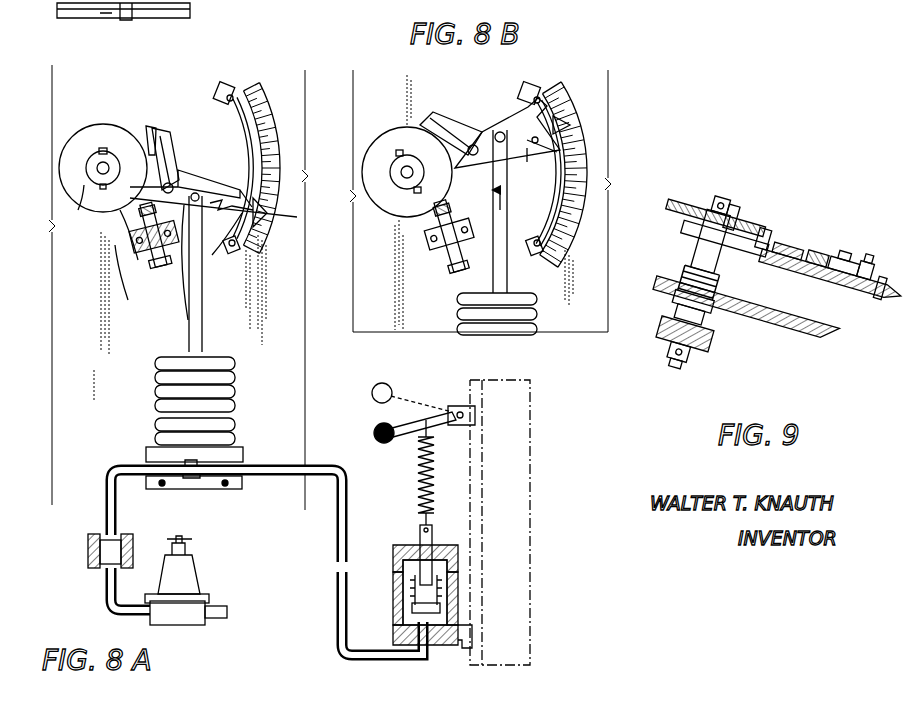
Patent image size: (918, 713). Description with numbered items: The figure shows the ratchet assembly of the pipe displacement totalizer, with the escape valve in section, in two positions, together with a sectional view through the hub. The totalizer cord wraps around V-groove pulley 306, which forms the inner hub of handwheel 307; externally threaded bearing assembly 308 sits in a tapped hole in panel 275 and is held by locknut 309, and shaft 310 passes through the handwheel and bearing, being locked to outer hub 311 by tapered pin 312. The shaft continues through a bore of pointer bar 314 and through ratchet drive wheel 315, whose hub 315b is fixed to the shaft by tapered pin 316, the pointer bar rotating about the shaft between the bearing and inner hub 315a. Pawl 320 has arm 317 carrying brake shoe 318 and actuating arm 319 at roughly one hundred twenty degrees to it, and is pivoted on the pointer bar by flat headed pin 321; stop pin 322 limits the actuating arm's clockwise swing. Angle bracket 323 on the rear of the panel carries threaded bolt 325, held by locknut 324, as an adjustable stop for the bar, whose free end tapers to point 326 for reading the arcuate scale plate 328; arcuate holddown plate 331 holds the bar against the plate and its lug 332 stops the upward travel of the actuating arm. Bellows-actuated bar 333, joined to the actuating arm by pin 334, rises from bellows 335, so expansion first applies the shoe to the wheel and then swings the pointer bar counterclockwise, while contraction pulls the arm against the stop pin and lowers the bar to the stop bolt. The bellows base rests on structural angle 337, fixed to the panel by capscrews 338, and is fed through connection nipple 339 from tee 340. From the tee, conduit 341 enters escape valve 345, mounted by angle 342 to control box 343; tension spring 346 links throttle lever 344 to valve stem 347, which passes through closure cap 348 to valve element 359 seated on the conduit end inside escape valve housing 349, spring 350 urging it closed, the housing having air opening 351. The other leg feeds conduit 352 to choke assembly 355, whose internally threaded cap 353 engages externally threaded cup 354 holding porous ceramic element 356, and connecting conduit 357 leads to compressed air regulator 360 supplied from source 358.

In FIG. 8A, the panel 275 is at (195, 4).
In FIG. 9, the panel 275 is at (823, 337).
In FIG. 9, the V-groove pulley 306 is at (712, 330).
In FIG. 9, the handwheel 307 is at (663, 326).
In FIG. 9, the externally threaded bearing assembly 308 is at (725, 283).
In FIG. 9, the locknut 309 is at (727, 303).
In FIG. 8A, the shaft 310 is at (105, 160).
In FIG. 9, the shaft 310 is at (677, 368).
In FIG. 9, the outer hub 311 is at (667, 349).
In FIG. 9, the tapered pin 312 is at (693, 357).
In FIG. 8A, the pointer bar 314 is at (214, 164).
In FIG. 8B, the pointer bar 314 is at (507, 145).
In FIG. 9, the pointer bar 314 is at (847, 283).
In FIG. 8A, the ratchet drive wheel 315 is at (125, 240).
In FIG. 8B, the ratchet drive wheel 315 is at (386, 132).
In FIG. 9, the ratchet drive wheel 315 is at (683, 203).
In FIG. 9, the inner hub 315a is at (690, 226).
In FIG. 8A, the hub 315b is at (85, 200).
In FIG. 9, the hub 315b is at (735, 207).
In FIG. 8A, the tapered pin 316 is at (103, 150).
In FIG. 9, the tapered pin 316 is at (718, 197).
In FIG. 8A, the arm 317 is at (172, 165).
In FIG. 9, the arm 317 is at (797, 240).
In FIG. 8A, the brake shoe 318 is at (148, 125).
In FIG. 8B, the brake shoe 318 is at (422, 115).
In FIG. 9, the brake shoe 318 is at (773, 236).
In FIG. 8A, the actuating arm 319 is at (150, 262).
In FIG. 9, the actuating arm 319 is at (862, 257).
In FIG. 8A, the shoe lever or pawl 320 is at (165, 115).
In FIG. 8B, the shoe lever or pawl 320 is at (468, 122).
In FIG. 9, the shoe lever or pawl 320 is at (840, 253).
In FIG. 8A, the flat headed pin 321 is at (128, 255).
In FIG. 8B, the flat headed pin 321 is at (450, 236).
In FIG. 9, the flat headed pin 321 is at (816, 233).
In FIG. 8A, the stop pin 322 is at (236, 225).
In FIG. 8B, the stop pin 322 is at (561, 125).
In FIG. 9, the stop pin 322 is at (857, 283).
In FIG. 8A, the angle bracket 323 is at (118, 275).
In FIG. 8A, the locknut 324 is at (136, 275).
In FIG. 8A, the threaded bolt 325 is at (140, 270).
In FIG. 8A, the point 326 is at (260, 232).
In FIG. 8B, the arcuate scale plate 328 is at (577, 100).
In FIG. 8A, the arcuate holddown plate 331 is at (268, 110).
In FIG. 8B, the arcuate holddown plate 331 is at (555, 192).
In FIG. 8B, the lug 332 is at (530, 92).
In FIG. 8A, the bellows-actuated bar 333 is at (203, 310).
In FIG. 8B, the bellows-actuated bar 333 is at (500, 211).
In FIG. 8A, the pin 334 is at (203, 240).
In FIG. 8A, the bellows 335 is at (237, 392).
In FIG. 8B, the bellows 335 is at (497, 314).
In FIG. 8A, the structural angle 337 is at (248, 460).
In FIG. 8A, the capscrews 338 is at (242, 490).
In FIG. 8A, the connection nipple 339 is at (183, 466).
In FIG. 8A, the tee 340 is at (197, 480).
In FIG. 8A, the conduit 341 is at (338, 605).
In FIG. 8A, the angle 342 is at (464, 648).
In FIG. 8A, the control box 343 is at (520, 521).
In FIG. 8A, the throttle lever 344 is at (378, 428).
In FIG. 8A, the escape valve 345 is at (408, 495).
In FIG. 8A, the tension spring 346 is at (415, 447).
In FIG. 8A, the valve stem 347 is at (418, 528).
In FIG. 8A, the closure cap 348 is at (395, 548).
In FIG. 8A, the escape valve housing 349 is at (398, 636).
In FIG. 8A, the spring 350 is at (437, 590).
In FIG. 8A, the air opening 351 is at (403, 578).
In FIG. 8A, the conduit 352 is at (105, 512).
In FIG. 8A, the internally threaded cap 353 is at (88, 545).
In FIG. 8A, the externally threaded cup 354 is at (100, 572).
In FIG. 8A, the choke assembly 355 is at (140, 540).
In FIG. 8A, the porous ceramic element 356 is at (97, 565).
In FIG. 8A, the connecting conduit 357 is at (106, 604).
In FIG. 8A, the source 358 is at (215, 620).
In FIG. 8A, the valve element 359 is at (412, 610).
In FIG. 8A, the compressed air regulator 360 is at (210, 576).